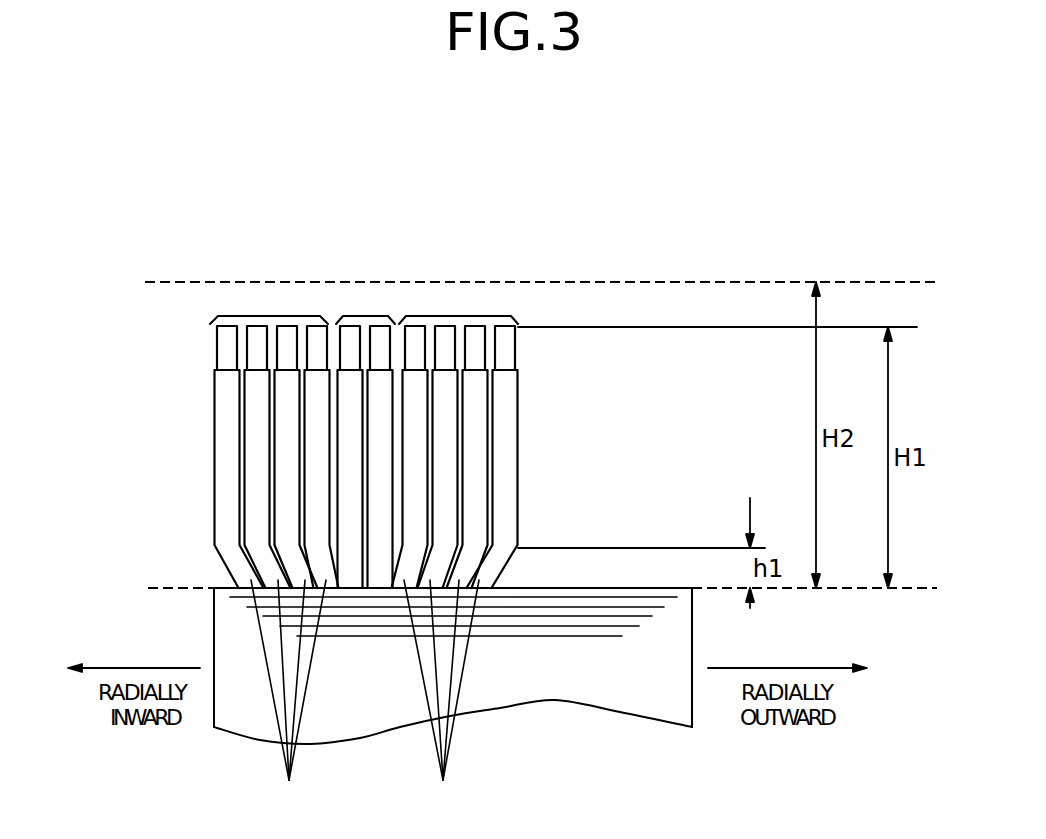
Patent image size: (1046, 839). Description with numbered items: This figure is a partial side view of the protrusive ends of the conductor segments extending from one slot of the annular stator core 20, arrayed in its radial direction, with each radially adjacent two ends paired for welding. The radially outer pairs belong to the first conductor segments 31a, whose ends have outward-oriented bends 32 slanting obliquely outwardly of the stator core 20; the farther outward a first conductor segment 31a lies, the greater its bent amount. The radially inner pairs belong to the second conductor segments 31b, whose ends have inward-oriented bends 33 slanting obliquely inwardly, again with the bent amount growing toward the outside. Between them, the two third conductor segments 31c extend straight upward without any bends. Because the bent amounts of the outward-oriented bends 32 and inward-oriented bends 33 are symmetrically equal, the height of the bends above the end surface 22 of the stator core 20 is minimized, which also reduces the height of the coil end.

The stator core 20 is at (356, 696).
The end surface 22 is at (578, 592).
The first conductor segments 31a is at (458, 308).
The second conductor segments 31b is at (277, 308).
The third conductor segments 31c is at (367, 308).
The outward-oriented bends 32 is at (441, 697).
The inward-oriented bends 33 is at (288, 697).